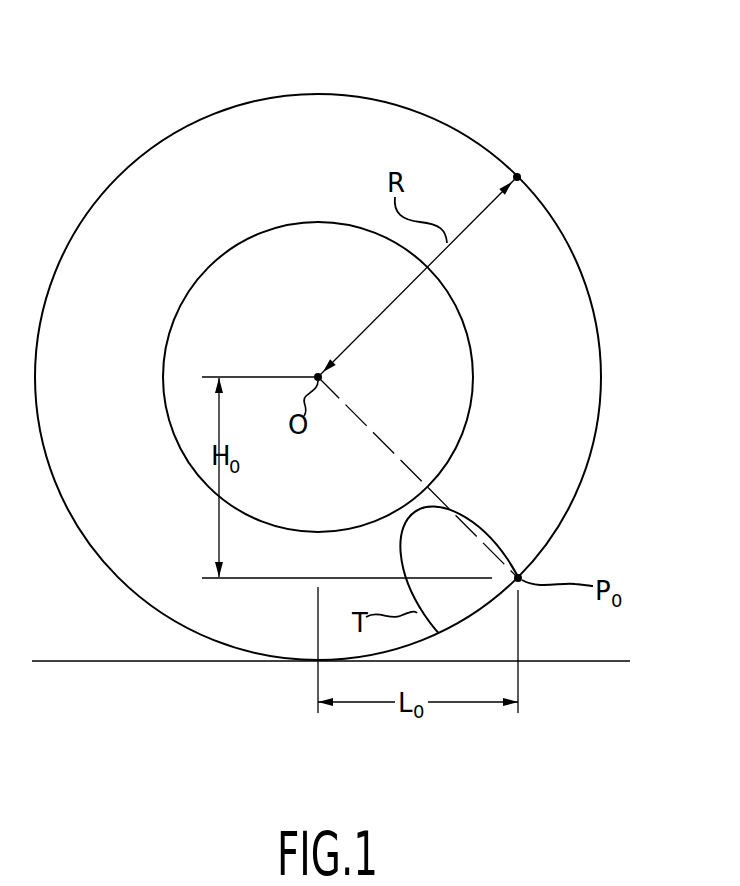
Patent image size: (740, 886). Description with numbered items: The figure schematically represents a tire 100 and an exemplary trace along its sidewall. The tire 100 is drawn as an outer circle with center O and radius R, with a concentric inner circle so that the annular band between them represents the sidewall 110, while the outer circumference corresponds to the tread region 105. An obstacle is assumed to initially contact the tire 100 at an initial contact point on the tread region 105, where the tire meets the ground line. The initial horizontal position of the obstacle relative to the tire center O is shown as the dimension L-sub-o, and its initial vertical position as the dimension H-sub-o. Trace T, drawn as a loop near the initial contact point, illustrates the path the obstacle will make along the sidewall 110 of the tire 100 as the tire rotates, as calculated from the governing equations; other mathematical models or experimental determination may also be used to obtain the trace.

The tire 100 is at (366, 339).
The tread region 105 is at (590, 287).
The sidewall 110 is at (547, 400).